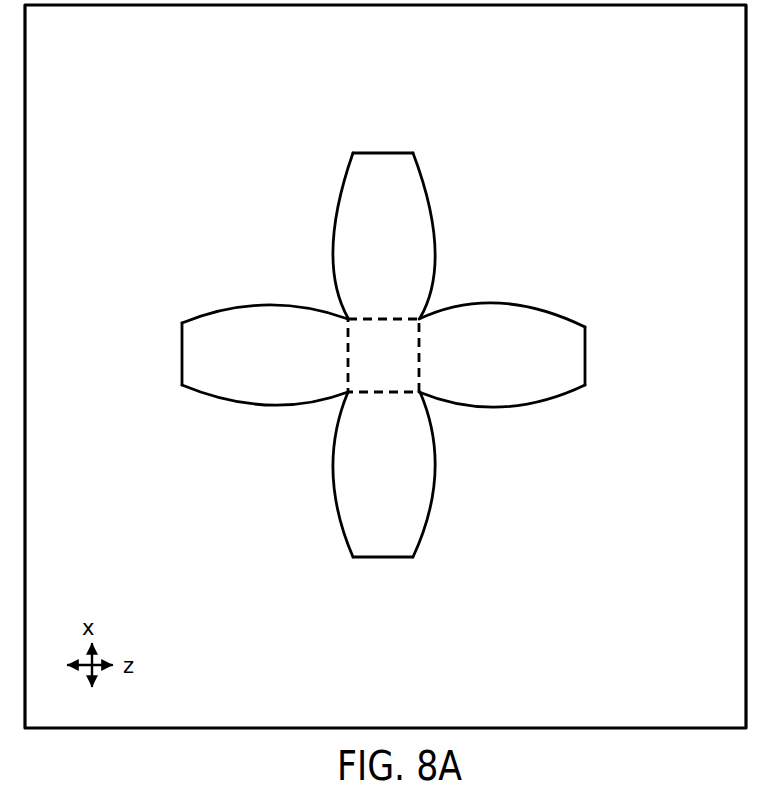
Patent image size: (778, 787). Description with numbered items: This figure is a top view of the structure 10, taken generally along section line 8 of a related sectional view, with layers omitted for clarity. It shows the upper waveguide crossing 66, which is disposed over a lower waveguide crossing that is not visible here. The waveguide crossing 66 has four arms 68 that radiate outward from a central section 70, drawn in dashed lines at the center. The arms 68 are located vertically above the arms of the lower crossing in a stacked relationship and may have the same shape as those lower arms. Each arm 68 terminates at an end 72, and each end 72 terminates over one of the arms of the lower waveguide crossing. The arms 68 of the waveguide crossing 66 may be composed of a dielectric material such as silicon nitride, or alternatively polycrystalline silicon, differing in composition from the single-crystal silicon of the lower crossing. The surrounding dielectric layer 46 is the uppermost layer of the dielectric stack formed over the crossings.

The structure 10 is at (179, 101).
The dielectric layer 46 is at (112, 538).
The waveguide crossing 66 is at (391, 358).
The arms 68 is at (353, 223).
The central section 70 is at (380, 343).
The ends 72 is at (373, 153).
The section line 8 is at (259, 260).